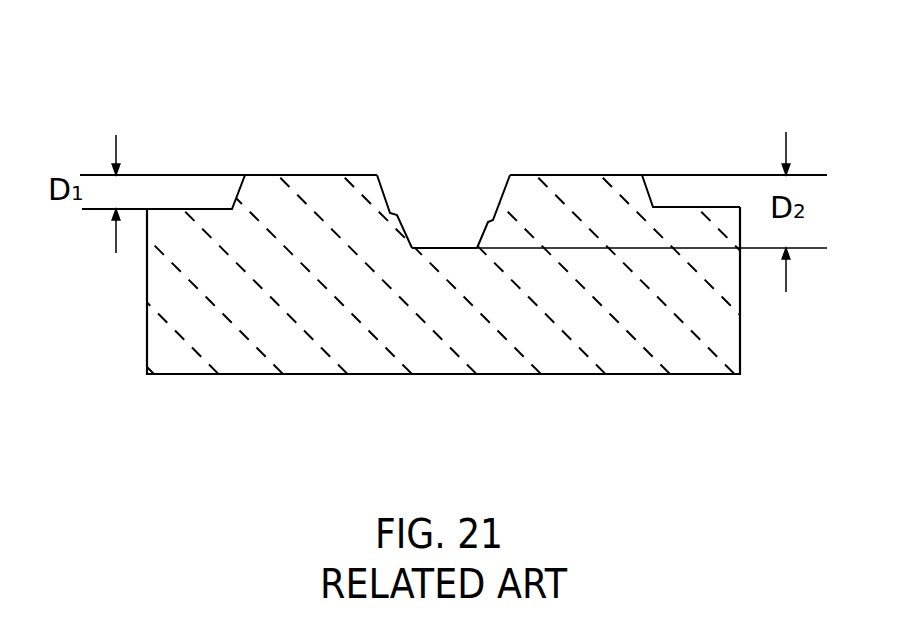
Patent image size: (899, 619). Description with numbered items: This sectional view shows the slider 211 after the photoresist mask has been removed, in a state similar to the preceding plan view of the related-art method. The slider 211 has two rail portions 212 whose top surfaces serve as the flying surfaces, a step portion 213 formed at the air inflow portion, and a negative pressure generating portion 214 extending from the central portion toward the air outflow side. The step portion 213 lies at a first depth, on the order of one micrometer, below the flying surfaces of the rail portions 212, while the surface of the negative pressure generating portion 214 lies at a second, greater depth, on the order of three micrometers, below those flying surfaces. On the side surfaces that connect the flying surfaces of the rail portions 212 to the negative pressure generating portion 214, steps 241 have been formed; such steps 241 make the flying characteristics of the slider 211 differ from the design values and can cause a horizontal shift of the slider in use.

The slider 211 is at (383, 374).
The rail portions 212 is at (588, 175).
The step portion 213 is at (176, 208).
The negative pressure generating portion 214 is at (443, 248).
The steps 241 is at (393, 212).